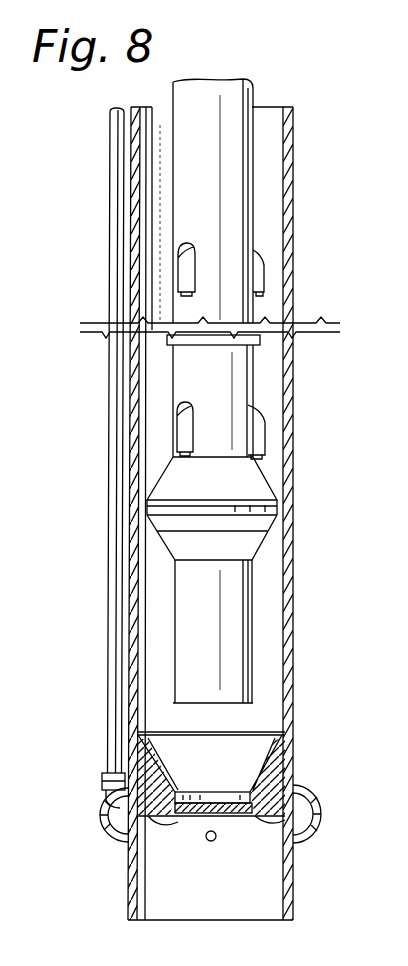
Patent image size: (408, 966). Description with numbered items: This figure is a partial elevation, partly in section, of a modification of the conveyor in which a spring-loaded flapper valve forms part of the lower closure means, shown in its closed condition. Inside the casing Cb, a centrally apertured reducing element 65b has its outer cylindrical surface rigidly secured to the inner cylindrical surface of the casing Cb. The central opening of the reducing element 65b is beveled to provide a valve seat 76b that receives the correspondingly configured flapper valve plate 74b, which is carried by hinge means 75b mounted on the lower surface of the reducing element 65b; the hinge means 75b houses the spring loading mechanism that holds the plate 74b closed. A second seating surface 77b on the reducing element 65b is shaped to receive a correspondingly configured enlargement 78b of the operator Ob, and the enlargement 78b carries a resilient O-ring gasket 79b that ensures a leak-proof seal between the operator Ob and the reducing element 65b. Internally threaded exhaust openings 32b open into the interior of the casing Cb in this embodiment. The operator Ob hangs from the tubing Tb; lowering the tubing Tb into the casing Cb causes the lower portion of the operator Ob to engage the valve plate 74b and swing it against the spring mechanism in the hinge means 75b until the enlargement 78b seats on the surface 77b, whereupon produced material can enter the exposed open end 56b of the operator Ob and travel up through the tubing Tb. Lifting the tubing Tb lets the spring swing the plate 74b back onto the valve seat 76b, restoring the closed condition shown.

The tubing Tb is at (232, 188).
The operator Ob is at (232, 377).
The enlargement 78b is at (277, 510).
The resilient O-ring gasket 79b is at (262, 542).
The casing Cb is at (293, 606).
The open end 56b is at (232, 710).
The second seating surface 77b is at (277, 750).
The reducing element 65b is at (283, 767).
The valve seat 76b is at (267, 803).
The exhaust openings 32b is at (100, 828).
The hinge means 75b is at (140, 855).
The flapper valve plate 74b is at (195, 817).